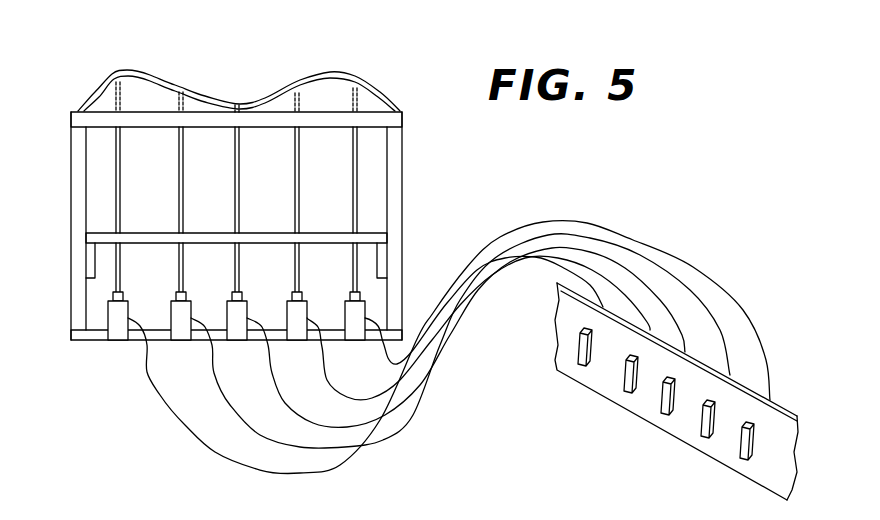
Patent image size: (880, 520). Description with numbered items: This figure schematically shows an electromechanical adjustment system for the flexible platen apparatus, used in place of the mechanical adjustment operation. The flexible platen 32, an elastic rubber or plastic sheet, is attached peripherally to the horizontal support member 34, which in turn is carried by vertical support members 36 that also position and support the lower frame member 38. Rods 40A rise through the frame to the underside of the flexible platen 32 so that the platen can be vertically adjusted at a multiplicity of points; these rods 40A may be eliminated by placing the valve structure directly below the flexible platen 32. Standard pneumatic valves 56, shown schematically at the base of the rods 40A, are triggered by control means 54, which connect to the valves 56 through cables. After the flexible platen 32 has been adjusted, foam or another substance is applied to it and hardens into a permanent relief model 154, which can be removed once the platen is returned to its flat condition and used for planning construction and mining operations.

The flexible platen 32 is at (100, 87).
The permanent relief model 154 is at (182, 78).
The horizontal support member 34 is at (398, 121).
The vertical support members 36 is at (78, 166).
The lower frame member 38 is at (370, 240).
The rods 40A is at (357, 172).
The control means 54 is at (757, 427).
The pneumatic valves 56 is at (238, 329).